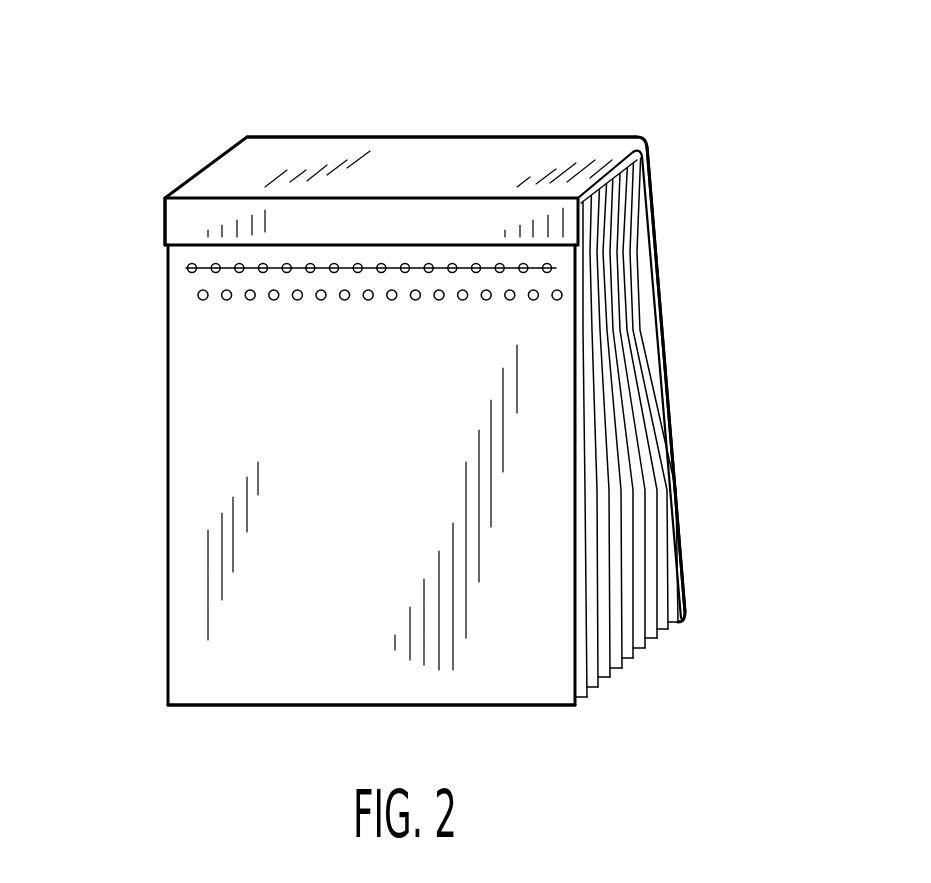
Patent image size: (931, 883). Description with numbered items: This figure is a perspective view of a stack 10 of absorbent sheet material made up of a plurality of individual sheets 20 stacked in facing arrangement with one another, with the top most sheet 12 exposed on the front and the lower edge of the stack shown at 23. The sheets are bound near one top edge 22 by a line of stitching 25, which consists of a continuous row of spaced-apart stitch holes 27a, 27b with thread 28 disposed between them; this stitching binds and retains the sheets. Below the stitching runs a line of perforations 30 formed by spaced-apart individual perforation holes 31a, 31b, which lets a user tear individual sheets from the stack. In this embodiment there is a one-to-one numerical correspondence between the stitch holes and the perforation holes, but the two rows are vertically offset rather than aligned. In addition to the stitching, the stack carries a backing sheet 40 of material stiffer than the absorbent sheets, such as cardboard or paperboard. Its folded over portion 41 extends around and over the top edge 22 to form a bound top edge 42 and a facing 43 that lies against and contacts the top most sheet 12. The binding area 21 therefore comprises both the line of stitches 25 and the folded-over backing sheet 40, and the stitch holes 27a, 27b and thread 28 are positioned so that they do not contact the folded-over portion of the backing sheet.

The stack of absorbent sheet material 10 is at (675, 92).
The top most sheet 12 is at (384, 479).
The individual sheets 20 is at (623, 677).
The binding area 21 is at (159, 197).
The top edge 22 is at (434, 338).
The bottom edge 23 is at (230, 713).
The line of stitching 25 is at (424, 304).
The stitch hole 27a is at (189, 273).
The stitch hole 27b is at (215, 273).
The thread 28 is at (203, 266).
The line of perforations 30 is at (397, 442).
The perforation hole 31a is at (250, 301).
The perforation hole 31b is at (274, 301).
The backing sheet 40 is at (662, 332).
The folded over portion 41 is at (633, 176).
The bound top edge 42 is at (555, 150).
The facing 43 is at (397, 215).